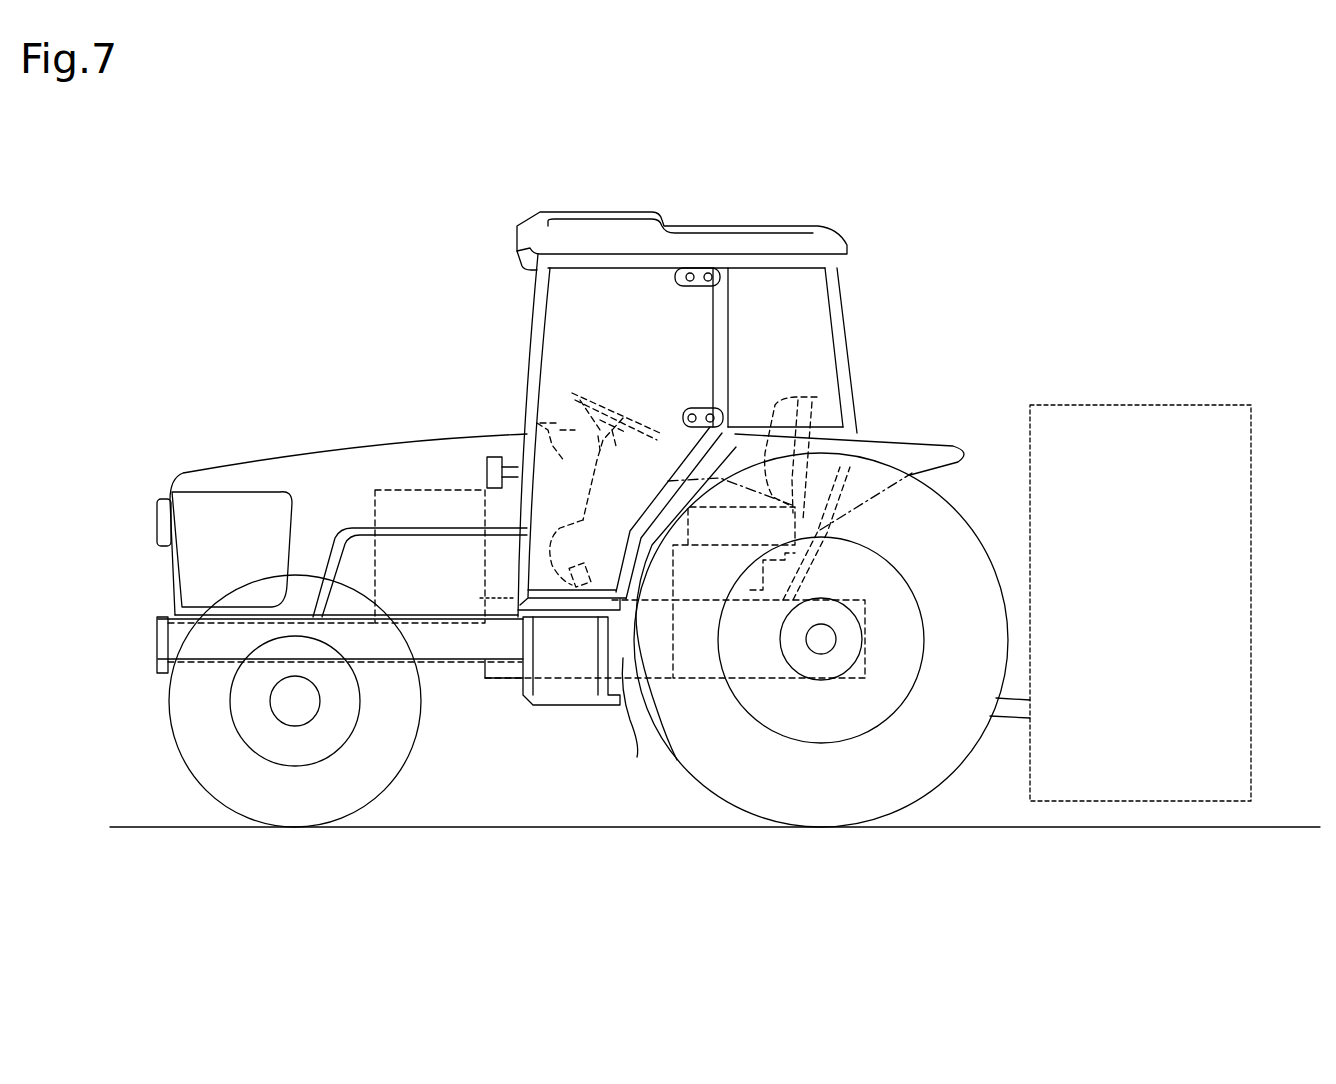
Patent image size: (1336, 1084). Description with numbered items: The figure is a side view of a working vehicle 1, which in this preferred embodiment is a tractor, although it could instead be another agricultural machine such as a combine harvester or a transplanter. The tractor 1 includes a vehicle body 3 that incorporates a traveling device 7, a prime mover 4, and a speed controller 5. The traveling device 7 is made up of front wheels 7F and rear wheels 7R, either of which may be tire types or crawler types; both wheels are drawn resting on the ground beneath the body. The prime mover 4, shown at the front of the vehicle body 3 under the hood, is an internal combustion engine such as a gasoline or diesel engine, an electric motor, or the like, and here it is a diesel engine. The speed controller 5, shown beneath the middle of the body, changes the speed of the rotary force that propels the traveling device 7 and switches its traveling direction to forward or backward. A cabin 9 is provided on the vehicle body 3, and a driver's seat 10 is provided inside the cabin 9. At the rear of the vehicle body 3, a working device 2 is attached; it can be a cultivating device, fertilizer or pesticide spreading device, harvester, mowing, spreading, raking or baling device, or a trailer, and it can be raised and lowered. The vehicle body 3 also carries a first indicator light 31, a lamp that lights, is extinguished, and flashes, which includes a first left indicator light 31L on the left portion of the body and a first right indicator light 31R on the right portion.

The working vehicle 1 is at (932, 170).
The working device 2 is at (1201, 403).
The vehicle body 3 is at (453, 668).
The prime mover 4 is at (492, 565).
The speed controller 5 is at (626, 658).
The traveling device 7 is at (588, 710).
The front wheels 7F is at (345, 800).
The rear wheels 7R is at (821, 685).
The cabin 9 is at (848, 343).
The driver's seat 10 is at (817, 397).
The first indicator light 31 is at (426, 427).
The first left indicator light 31L is at (502, 472).
The first right indicator light 31R is at (495, 455).